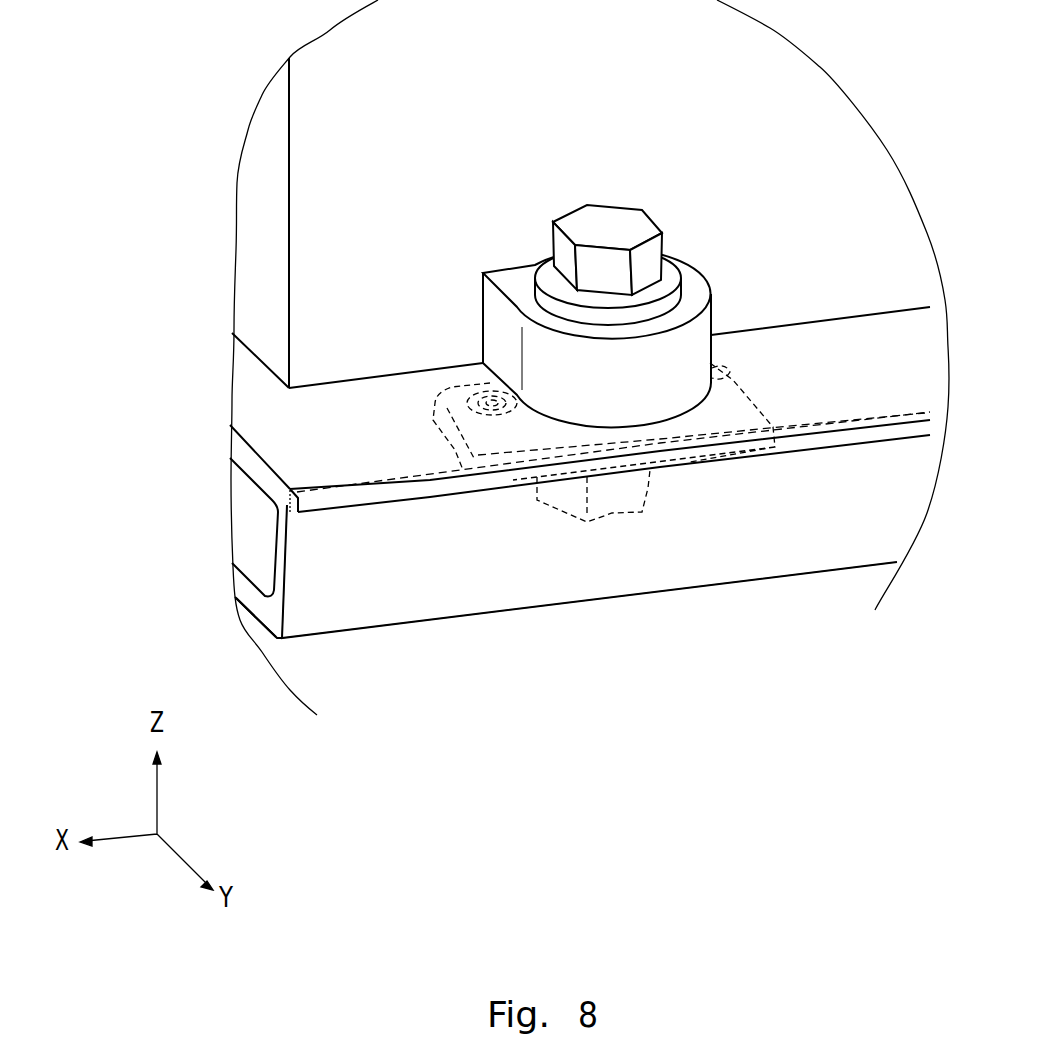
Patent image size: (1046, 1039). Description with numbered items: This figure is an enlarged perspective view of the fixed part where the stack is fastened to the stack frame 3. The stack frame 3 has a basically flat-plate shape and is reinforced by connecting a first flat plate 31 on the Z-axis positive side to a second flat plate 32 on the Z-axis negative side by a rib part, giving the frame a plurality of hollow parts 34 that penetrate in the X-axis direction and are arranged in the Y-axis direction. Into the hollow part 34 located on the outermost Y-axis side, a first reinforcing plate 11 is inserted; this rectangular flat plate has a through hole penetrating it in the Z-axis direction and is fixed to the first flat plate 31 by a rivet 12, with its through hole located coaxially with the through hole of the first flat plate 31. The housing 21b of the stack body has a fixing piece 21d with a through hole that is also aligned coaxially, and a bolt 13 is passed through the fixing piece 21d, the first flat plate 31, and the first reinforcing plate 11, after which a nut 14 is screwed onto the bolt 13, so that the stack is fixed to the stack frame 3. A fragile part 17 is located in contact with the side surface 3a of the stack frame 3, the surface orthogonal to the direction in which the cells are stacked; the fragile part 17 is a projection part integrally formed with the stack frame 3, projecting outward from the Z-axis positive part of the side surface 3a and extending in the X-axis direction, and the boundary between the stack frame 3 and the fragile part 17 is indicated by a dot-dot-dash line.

The stack frame 3 is at (506, 606).
The side surface 3a is at (723, 573).
The first reinforcing plate 11 is at (452, 470).
The rivet 12 is at (733, 380).
The bolt 13 is at (607, 222).
The nut 14 is at (608, 520).
The fragile part 17 is at (835, 442).
The housing 21b is at (312, 206).
The fixing piece 21d is at (700, 335).
The first flat plate 31 is at (262, 407).
The second flat plate 32 is at (248, 600).
The hollow part 34 is at (232, 575).